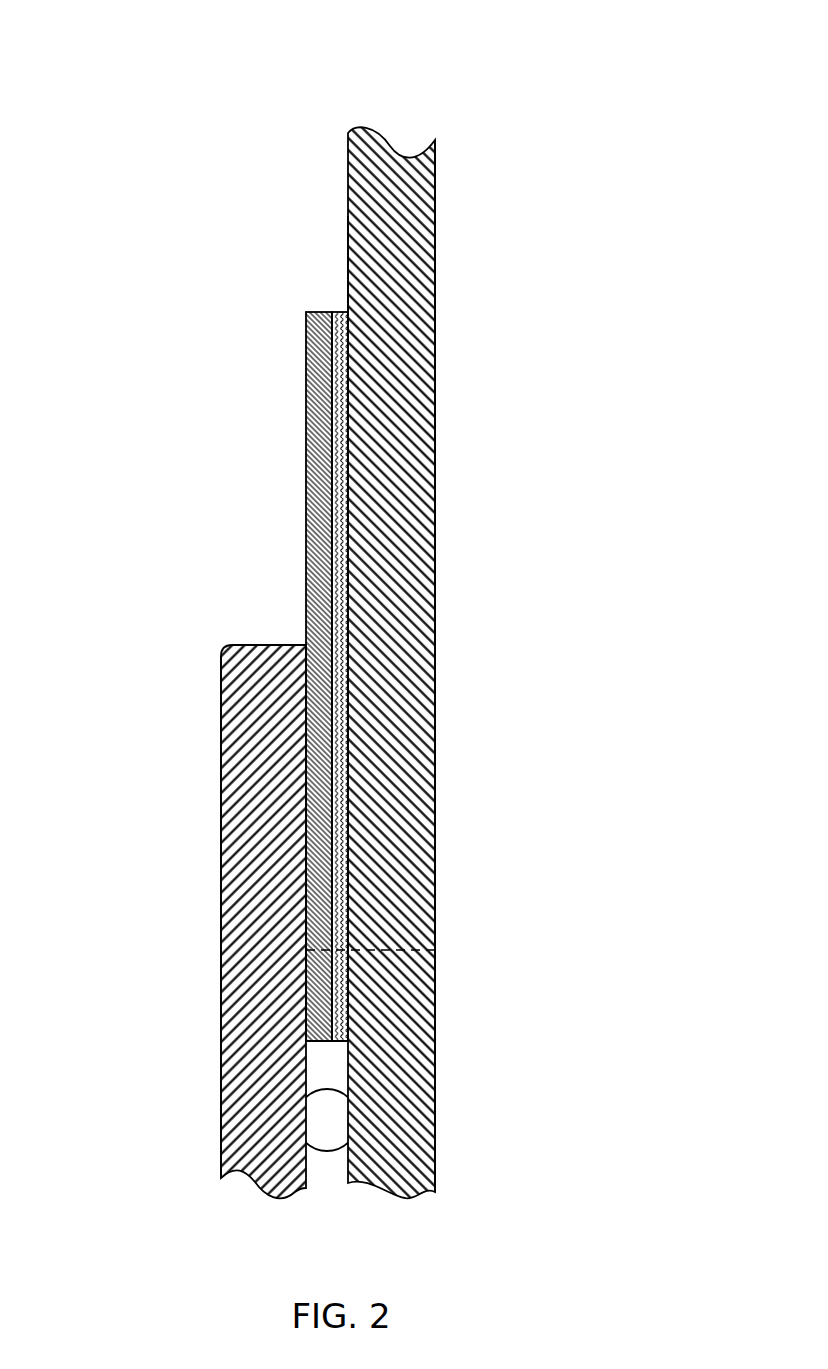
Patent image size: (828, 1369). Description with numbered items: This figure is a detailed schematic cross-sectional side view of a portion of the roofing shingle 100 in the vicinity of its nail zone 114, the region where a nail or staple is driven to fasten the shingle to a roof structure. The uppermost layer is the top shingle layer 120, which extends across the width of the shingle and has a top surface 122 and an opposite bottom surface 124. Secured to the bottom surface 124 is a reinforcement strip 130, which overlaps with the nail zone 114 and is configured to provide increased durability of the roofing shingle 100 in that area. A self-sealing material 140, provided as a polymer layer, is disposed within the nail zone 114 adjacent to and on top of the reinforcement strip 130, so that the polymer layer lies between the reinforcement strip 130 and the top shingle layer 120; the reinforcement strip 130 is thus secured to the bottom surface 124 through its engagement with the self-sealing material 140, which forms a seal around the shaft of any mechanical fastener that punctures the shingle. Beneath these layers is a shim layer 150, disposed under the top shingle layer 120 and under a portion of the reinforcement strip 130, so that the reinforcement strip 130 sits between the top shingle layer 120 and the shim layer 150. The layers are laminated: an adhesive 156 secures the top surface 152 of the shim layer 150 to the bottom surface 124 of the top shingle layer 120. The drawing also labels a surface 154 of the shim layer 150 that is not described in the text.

The roofing shingle 100 is at (590, 92).
The nail zone 114 is at (494, 314).
The top shingle layer 120 is at (328, 150).
The top surface 122 is at (435, 203).
The bottom surface 124 is at (348, 216).
The reinforcement strip 130 is at (265, 416).
The self-sealing material 140 is at (343, 312).
The shim layer 150 is at (175, 764).
The top surface 152 is at (310, 1071).
The outer surface of body 154 is at (221, 1065).
The adhesive 156 is at (335, 1119).